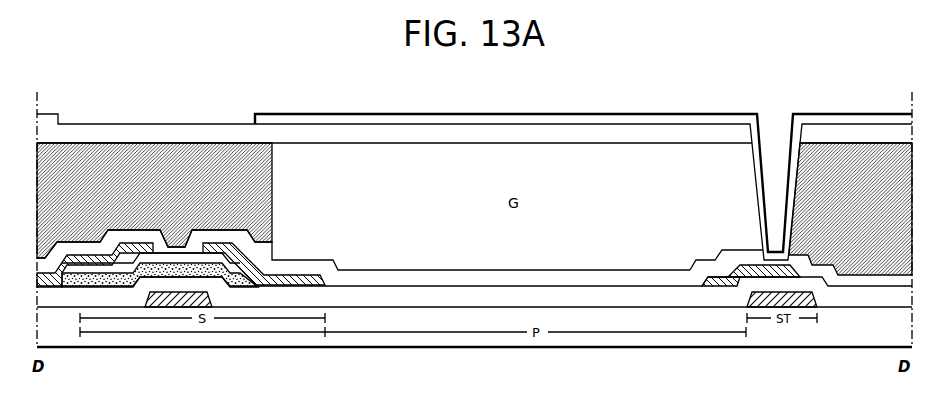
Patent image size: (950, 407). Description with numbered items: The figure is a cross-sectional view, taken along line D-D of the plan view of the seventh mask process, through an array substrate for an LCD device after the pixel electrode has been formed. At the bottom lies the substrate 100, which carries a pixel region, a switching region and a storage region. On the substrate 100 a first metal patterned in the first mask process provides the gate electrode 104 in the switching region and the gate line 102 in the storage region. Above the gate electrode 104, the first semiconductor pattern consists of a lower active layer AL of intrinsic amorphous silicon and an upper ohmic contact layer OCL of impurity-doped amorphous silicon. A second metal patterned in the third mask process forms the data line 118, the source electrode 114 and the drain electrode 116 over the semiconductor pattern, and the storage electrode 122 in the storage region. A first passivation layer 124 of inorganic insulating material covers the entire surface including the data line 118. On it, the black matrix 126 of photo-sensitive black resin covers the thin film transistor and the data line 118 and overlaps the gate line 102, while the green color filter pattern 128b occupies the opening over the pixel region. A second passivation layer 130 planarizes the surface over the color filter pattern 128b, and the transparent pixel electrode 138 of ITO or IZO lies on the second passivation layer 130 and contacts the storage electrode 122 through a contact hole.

The substrate 100 is at (888, 336).
The gate line 102 is at (810, 307).
The gate electrode 104 is at (170, 307).
The source electrode 114 is at (135, 260).
The drain electrode 116 is at (308, 262).
The data line 118 is at (77, 255).
The storage electrode 122 is at (716, 265).
The first passivation layer 124 is at (667, 268).
The black matrix 126 is at (875, 142).
The green color filter pattern 128b is at (508, 142).
The second passivation layer 130 is at (405, 123).
The pixel electrode 138 is at (580, 113).
The active layer AL is at (172, 262).
The ohmic contact layer OCL is at (227, 235).